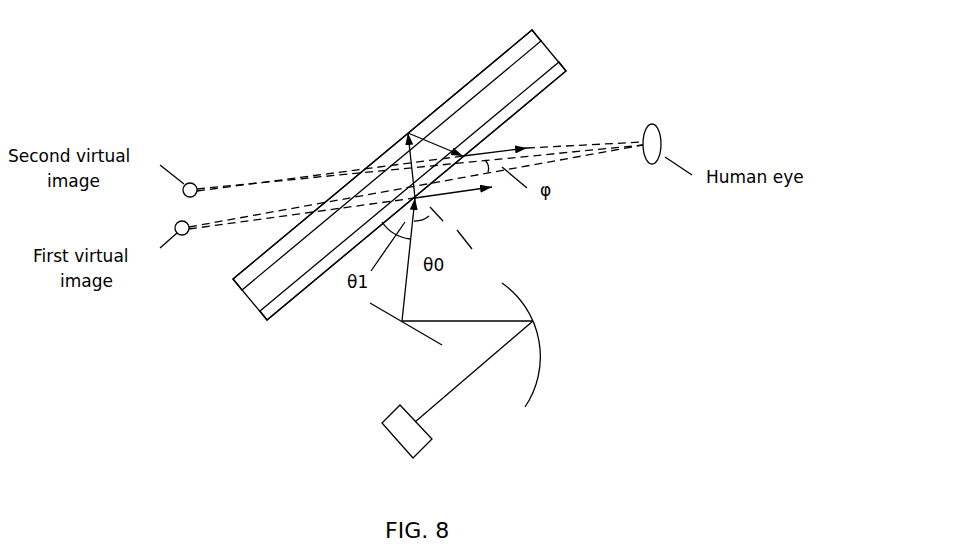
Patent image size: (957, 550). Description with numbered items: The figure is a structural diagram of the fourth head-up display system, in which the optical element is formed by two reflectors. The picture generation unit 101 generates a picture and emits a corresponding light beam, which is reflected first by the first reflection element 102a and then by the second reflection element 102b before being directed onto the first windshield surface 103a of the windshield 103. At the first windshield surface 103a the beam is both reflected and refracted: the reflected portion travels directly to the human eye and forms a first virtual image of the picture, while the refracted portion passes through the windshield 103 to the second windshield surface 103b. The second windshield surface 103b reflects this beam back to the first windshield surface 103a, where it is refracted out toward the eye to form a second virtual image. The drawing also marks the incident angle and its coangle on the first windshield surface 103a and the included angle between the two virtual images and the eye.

The picture generation unit 101 is at (397, 443).
The first reflection element 102a is at (542, 358).
The second reflection element 102b is at (402, 322).
The windshield 103 is at (548, 49).
The first windshield surface 103a is at (552, 80).
The second windshield surface 103b is at (487, 70).